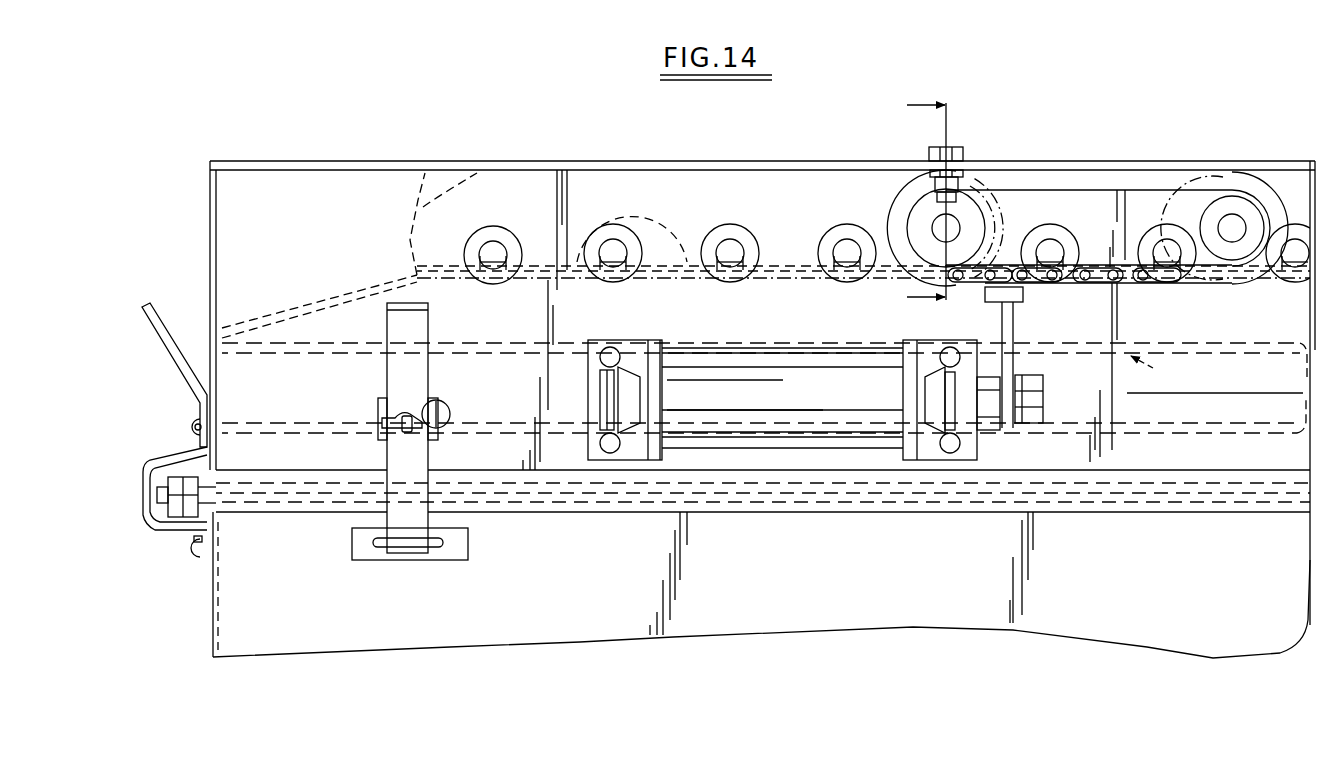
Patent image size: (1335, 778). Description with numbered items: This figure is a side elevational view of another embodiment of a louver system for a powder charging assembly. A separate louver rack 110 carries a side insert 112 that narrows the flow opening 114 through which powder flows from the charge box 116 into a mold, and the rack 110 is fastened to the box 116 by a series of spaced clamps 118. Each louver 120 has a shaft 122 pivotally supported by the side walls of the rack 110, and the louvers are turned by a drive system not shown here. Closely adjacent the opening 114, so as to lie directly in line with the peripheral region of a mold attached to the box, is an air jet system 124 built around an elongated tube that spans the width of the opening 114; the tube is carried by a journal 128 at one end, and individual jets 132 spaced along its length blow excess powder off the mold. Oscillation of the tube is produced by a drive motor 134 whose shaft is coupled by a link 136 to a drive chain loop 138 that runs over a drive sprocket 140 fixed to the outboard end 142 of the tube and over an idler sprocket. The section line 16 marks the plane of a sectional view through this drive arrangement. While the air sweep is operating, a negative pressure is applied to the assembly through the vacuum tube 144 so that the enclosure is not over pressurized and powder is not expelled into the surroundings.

The section line 16 is at (926, 214).
The louver rack 110 is at (415, 152).
The side insert 112 is at (766, 237).
The flow opening 114 is at (595, 183).
The charge box 116 is at (207, 636).
The clamp 118 is at (174, 446).
The louver 120 is at (632, 238).
The shaft 122 is at (730, 243).
The air jet system 124 is at (975, 152).
The journal 128 is at (957, 227).
The jet 132 is at (929, 152).
The drive motor 134 is at (810, 367).
The link 136 is at (1005, 323).
The drive chain loop 138 is at (1143, 280).
The drive sprocket 140 is at (910, 220).
The outboard end 142 is at (1228, 193).
The vacuum tube 144 is at (463, 345).